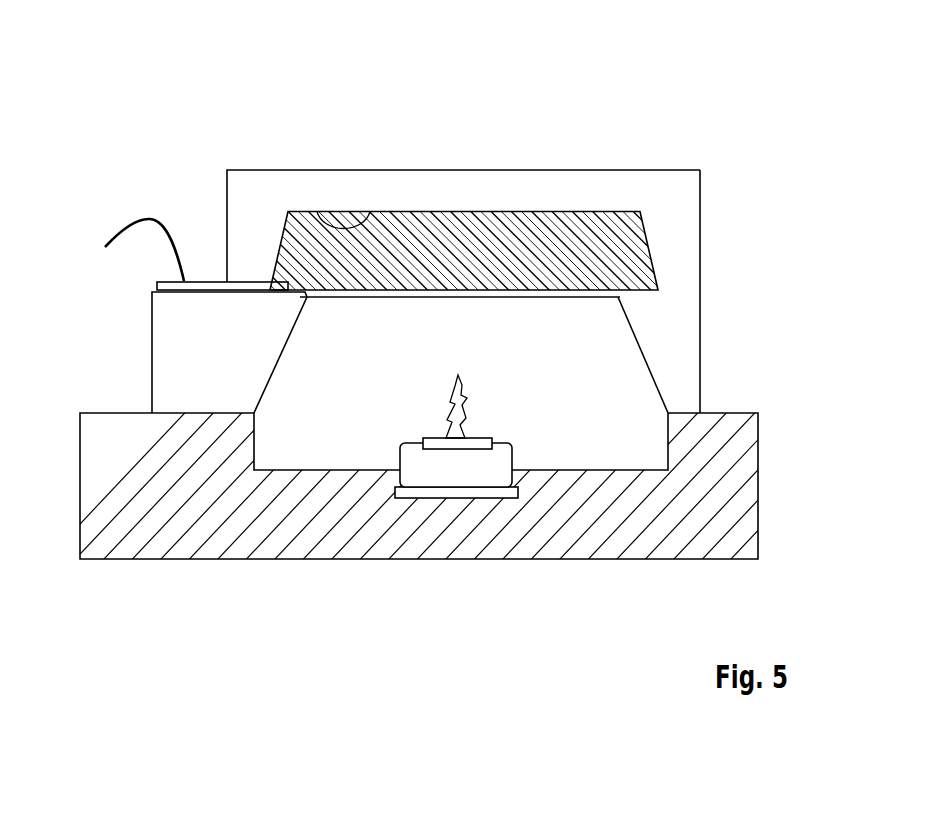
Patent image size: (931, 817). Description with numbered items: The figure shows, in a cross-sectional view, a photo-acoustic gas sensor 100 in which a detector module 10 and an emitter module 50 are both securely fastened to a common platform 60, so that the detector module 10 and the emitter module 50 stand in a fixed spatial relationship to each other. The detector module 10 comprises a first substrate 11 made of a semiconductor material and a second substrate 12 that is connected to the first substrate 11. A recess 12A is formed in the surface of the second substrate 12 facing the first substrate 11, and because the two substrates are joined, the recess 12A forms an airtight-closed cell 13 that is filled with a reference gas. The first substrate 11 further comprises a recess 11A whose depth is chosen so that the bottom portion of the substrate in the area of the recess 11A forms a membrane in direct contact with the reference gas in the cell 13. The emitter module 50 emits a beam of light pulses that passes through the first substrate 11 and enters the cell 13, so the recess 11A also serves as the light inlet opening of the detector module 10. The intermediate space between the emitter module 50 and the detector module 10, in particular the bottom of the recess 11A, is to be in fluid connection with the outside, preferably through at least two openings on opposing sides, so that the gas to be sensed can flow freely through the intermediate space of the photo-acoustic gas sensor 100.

The photo-acoustic gas sensor 100 is at (748, 46).
The detector module 10 is at (710, 235).
The first substrate 11 is at (682, 354).
The recess 11A is at (586, 301).
The second substrate 12 is at (277, 182).
The recess 12A is at (371, 214).
The airtight-closed cell 13 is at (448, 243).
The emitter module 50 is at (442, 478).
The platform 60 is at (245, 543).